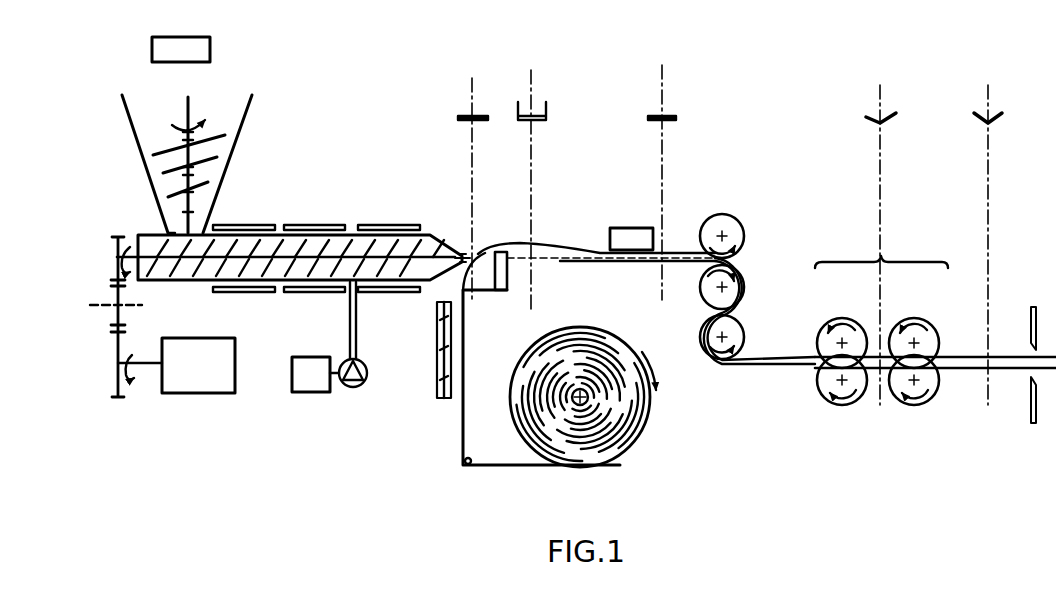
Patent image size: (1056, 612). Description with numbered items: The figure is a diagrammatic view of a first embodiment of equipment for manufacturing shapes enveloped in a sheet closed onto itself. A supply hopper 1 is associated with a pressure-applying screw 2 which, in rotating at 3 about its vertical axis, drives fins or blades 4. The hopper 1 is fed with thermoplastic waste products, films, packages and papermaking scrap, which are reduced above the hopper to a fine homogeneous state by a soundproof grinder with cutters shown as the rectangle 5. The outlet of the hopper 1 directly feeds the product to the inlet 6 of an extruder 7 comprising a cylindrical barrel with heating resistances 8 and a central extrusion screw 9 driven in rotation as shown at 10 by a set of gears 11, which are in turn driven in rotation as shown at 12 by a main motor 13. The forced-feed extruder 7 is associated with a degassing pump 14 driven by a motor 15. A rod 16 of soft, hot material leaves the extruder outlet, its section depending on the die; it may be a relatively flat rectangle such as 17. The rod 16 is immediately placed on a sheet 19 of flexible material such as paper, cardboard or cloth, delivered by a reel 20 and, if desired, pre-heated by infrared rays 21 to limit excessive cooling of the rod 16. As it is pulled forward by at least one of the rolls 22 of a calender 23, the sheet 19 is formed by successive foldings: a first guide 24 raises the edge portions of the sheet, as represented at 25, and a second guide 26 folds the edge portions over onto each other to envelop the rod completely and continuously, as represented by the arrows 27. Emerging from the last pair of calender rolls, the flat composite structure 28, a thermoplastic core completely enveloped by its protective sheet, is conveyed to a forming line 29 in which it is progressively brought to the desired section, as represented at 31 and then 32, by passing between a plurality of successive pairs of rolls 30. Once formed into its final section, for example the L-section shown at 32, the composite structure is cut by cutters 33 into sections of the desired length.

The supply hopper 1 is at (145, 167).
The pressure-applying screw 2 is at (208, 162).
The rotation of the pressure-applying screw 3 is at (176, 125).
The fins or blades 4 is at (230, 137).
The soundproof grinder with cutters 5 is at (185, 48).
The inlet of the extruder 6 is at (173, 232).
The extruder 7 is at (195, 284).
The heating resistances 8 is at (320, 223).
The central extrusion screw 9 is at (318, 282).
The rotation of the extrusion screw 10 is at (128, 248).
The set of gears 11 is at (108, 332).
The rotation of the set of gears 12 is at (115, 372).
The main motor 13 is at (189, 388).
The degassing pump 14 is at (357, 390).
The motor 15 is at (306, 380).
The rod of soft material 16 is at (466, 252).
The relatively flat rectangle section 17 is at (462, 114).
The sheet of flexible material 19 is at (463, 413).
The reel 20 is at (622, 418).
The infrared rays 21 is at (446, 392).
The rolls of the calender 22 is at (712, 300).
The calender 23 is at (732, 222).
The first guide 24 is at (497, 250).
The raised edge portions 25 is at (548, 104).
The second guide 26 is at (630, 233).
The arrows 27 is at (659, 113).
The flat composite structure 28 is at (748, 368).
The forming line 29 is at (901, 245).
The successive pairs of rolls 30 is at (913, 400).
The intermediate section 31 is at (868, 127).
The L-section structure 32 is at (998, 124).
The cutters 33 is at (1030, 385).